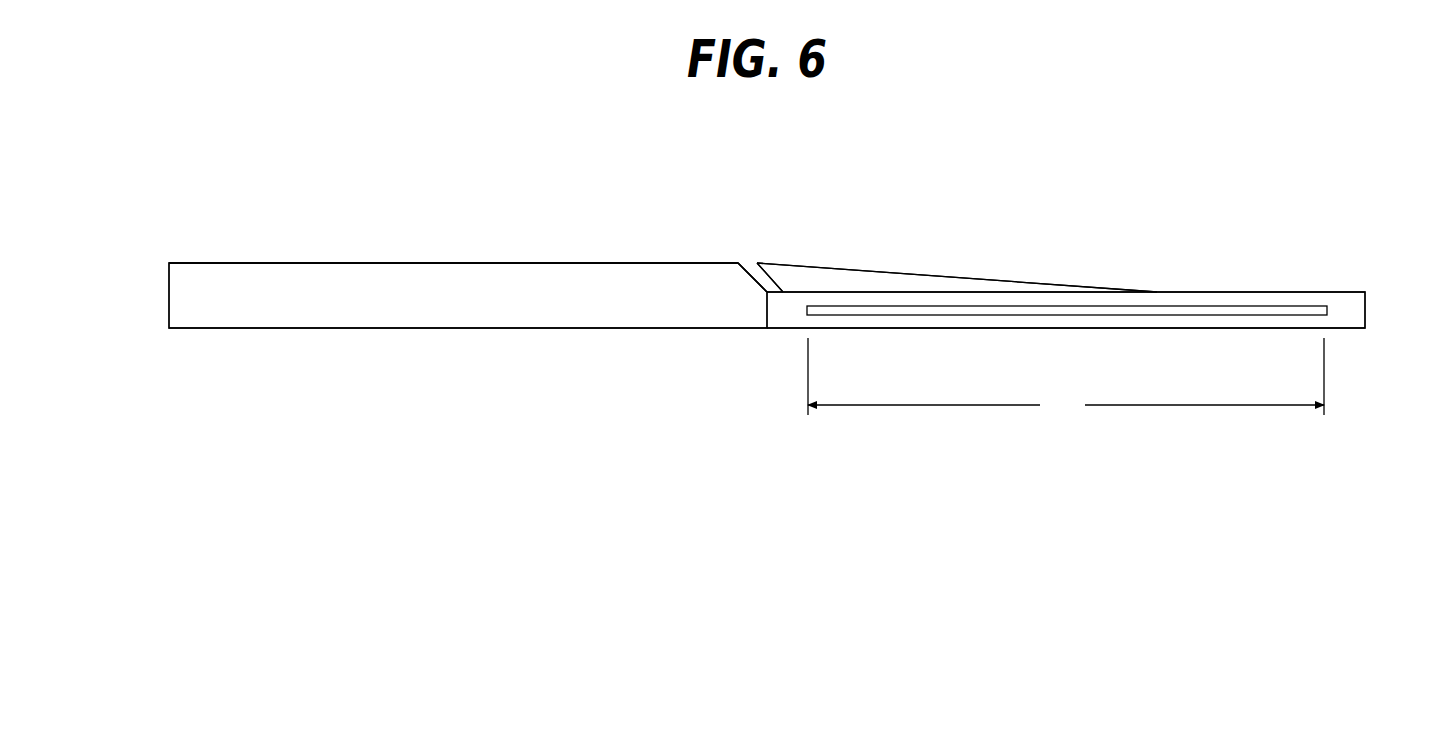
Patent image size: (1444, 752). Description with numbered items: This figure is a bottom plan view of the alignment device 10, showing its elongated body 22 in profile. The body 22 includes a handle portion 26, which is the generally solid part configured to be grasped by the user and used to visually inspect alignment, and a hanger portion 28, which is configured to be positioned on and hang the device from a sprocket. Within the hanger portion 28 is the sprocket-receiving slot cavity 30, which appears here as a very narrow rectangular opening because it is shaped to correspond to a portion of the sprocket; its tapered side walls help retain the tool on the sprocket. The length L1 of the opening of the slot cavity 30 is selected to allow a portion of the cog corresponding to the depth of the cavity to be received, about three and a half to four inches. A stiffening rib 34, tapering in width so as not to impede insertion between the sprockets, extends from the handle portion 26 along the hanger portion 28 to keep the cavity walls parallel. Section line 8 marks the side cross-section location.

The implant 10 is at (422, 182).
The body 22 is at (367, 303).
The handle portion 26 is at (588, 255).
The stiffening rib 34 is at (872, 280).
The hanger portion 28 is at (1052, 268).
The sprocket-receiving slot cavity 30 is at (940, 316).
The section line 8- 8 is at (162, 310).
The length of the opening of the slot cavity L1 is at (1066, 382).